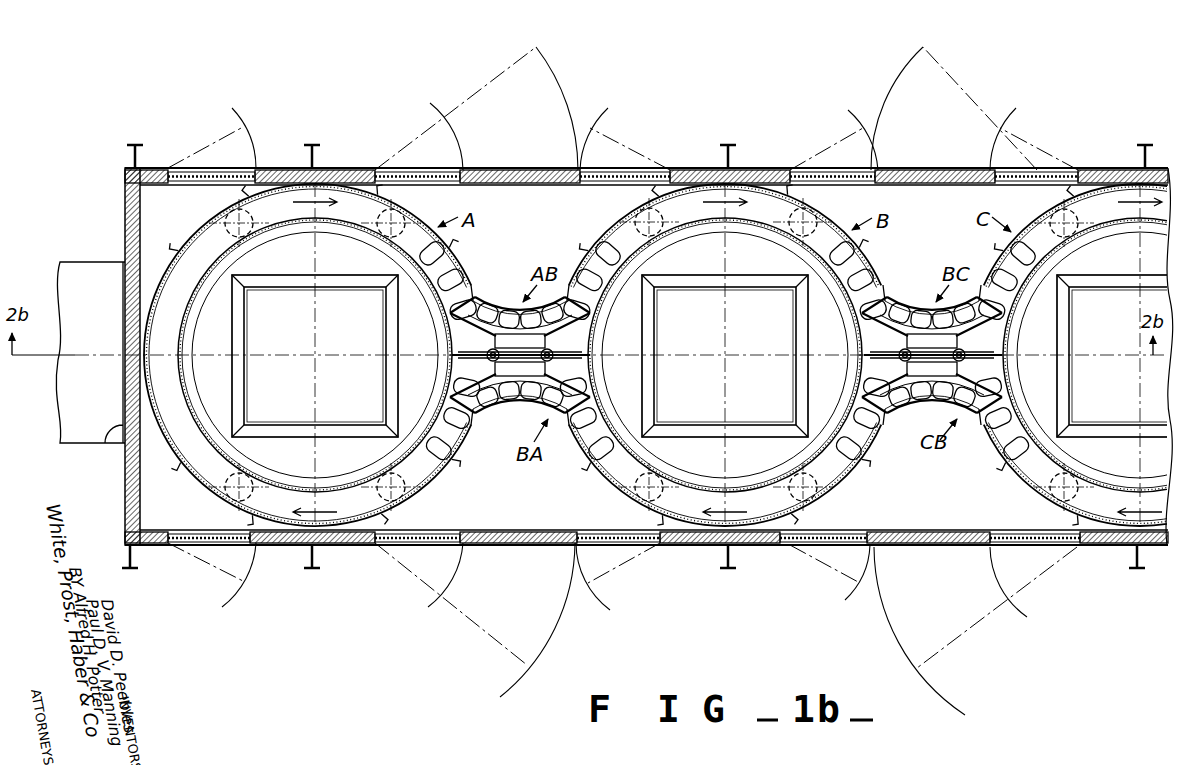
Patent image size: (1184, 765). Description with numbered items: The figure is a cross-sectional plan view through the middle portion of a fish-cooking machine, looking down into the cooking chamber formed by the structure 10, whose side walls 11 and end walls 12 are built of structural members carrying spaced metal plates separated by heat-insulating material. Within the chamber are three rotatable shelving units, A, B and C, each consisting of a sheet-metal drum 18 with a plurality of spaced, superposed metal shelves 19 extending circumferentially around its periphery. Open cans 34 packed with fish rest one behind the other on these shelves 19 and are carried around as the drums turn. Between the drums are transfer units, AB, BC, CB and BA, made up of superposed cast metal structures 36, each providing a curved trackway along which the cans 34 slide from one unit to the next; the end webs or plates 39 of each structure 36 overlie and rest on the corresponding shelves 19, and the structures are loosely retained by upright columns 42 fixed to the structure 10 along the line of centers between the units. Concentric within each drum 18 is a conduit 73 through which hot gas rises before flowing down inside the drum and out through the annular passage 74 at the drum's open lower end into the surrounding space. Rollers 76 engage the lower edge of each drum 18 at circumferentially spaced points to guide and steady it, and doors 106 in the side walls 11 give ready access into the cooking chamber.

The structure 10 is at (359, 167).
The side walls 11 is at (282, 176).
The end walls 12 is at (128, 208).
The drum 18 is at (352, 224).
The shelves 19 is at (425, 470).
The open cans 34 is at (448, 271).
The metal structures 36 is at (515, 299).
The end webs or plates 39 is at (458, 372).
The upright columns 42 is at (482, 350).
The conduit 73 is at (238, 338).
The annular passage 74 is at (256, 467).
The rollers 76 is at (227, 217).
The doors 106 is at (212, 164).